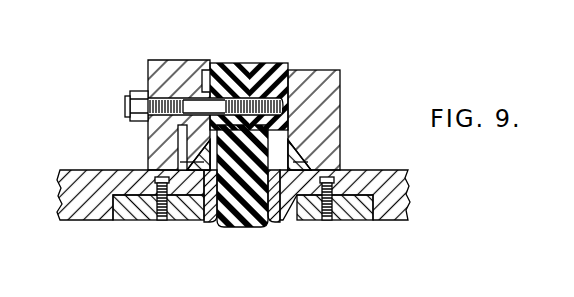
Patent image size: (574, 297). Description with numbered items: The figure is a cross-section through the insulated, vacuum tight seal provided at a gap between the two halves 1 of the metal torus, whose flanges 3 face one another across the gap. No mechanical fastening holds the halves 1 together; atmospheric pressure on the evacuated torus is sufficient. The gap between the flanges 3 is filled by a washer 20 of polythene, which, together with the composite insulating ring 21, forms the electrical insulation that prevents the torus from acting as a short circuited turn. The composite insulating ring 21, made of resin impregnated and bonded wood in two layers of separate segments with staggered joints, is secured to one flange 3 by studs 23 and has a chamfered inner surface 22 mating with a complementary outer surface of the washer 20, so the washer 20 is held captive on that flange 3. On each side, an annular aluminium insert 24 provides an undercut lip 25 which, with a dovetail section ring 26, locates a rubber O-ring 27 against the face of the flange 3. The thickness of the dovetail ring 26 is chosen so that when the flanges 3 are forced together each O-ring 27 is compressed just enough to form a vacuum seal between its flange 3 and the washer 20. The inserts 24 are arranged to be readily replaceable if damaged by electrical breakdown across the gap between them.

The half of the torus 1 is at (72, 195).
The flange 3 is at (170, 68).
The washer 20 is at (252, 222).
The composite insulating ring 21 is at (250, 63).
The chamfered inner surface 22 is at (225, 218).
The stud 23 is at (125, 110).
The annular aluminium insert 24 is at (132, 215).
The undercut lip 25 is at (210, 216).
The dovetail section ring 26 is at (203, 162).
The rubber O-ring 27 is at (207, 140).